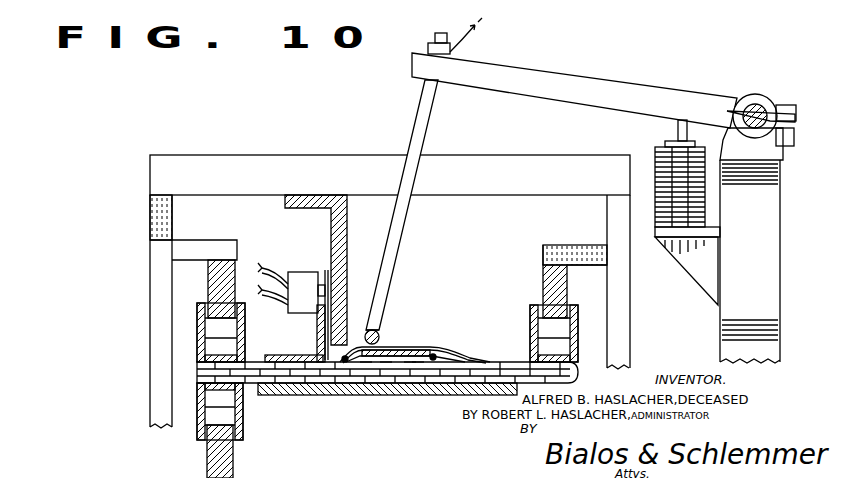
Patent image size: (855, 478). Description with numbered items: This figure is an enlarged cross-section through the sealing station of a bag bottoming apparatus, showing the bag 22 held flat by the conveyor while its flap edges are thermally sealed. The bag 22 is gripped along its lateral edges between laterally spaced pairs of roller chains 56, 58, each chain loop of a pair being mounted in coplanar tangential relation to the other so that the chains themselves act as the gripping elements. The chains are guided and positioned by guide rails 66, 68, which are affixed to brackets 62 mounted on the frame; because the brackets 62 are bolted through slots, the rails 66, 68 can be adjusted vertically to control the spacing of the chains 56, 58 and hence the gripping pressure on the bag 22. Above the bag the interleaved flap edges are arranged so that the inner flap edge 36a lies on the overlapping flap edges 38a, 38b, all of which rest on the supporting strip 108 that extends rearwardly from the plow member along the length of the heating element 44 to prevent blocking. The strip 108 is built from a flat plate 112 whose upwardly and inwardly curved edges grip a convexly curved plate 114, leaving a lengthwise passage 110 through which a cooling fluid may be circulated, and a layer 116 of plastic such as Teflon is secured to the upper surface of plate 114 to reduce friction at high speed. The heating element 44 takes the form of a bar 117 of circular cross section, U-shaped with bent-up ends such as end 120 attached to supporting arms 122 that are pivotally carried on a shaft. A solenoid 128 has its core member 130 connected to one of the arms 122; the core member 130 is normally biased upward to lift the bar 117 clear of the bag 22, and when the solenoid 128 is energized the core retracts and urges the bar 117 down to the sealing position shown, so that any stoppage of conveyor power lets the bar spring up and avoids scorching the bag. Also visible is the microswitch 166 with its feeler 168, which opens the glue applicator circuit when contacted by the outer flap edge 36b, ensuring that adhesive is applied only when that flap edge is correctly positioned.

The bag 22 is at (189, 375).
The inner flap edge 36a is at (408, 357).
The outer flap edge 36b is at (327, 272).
The inner flap edge 38a is at (400, 350).
The outer flap edge 38b is at (392, 342).
The heating element 44 is at (400, 223).
The roller chain 56 is at (197, 322).
The roller chain 58 is at (197, 405).
The bracket 62 is at (172, 304).
The guide rail 66 is at (212, 279).
The guide rail 68 is at (218, 458).
The supporting strip 108 is at (439, 346).
The lengthwise passage 110 is at (387, 358).
The flat plate 112 is at (418, 358).
The convexly curved plate 114 is at (373, 358).
The layer of plastic 116 is at (409, 360).
The bar 117 is at (386, 282).
The end of bar 120 is at (418, 141).
The supporting arm 122 is at (614, 85).
The solenoid 128 is at (655, 180).
The core member 130 is at (678, 130).
The microswitch 166 is at (300, 312).
The feeler 168 is at (330, 285).